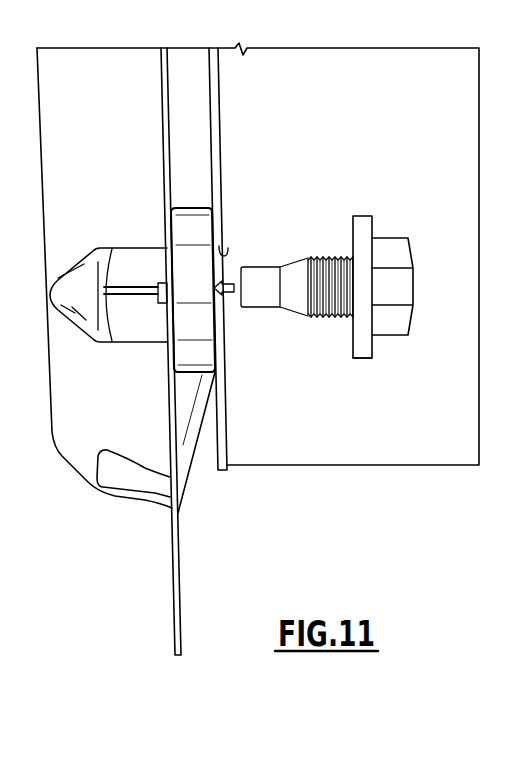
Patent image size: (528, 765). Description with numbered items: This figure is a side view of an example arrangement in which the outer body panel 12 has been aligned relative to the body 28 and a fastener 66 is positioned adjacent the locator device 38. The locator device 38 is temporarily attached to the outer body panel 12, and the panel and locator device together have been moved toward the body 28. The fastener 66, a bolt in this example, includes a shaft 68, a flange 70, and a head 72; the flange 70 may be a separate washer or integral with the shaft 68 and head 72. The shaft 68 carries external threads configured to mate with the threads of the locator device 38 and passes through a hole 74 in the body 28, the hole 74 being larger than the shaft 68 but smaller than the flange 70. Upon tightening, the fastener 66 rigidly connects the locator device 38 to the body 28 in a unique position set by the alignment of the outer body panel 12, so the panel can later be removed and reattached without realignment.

The outer body panel 12 is at (160, 603).
The body 28 is at (222, 472).
The locator device 38 is at (188, 188).
The fastener 66 is at (364, 198).
The shaft 68 is at (318, 258).
The flange 70 is at (364, 358).
The head 72 is at (397, 290).
The hole 74 is at (226, 262).